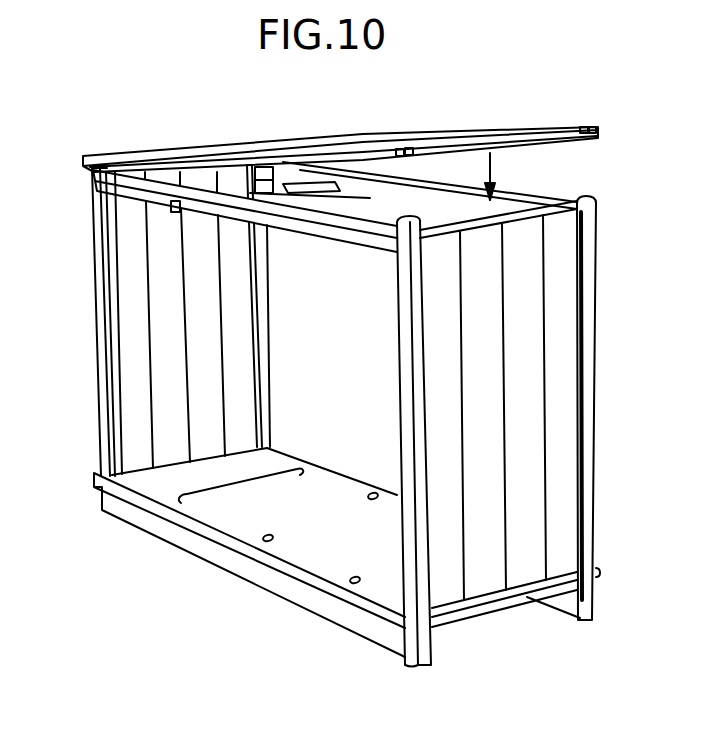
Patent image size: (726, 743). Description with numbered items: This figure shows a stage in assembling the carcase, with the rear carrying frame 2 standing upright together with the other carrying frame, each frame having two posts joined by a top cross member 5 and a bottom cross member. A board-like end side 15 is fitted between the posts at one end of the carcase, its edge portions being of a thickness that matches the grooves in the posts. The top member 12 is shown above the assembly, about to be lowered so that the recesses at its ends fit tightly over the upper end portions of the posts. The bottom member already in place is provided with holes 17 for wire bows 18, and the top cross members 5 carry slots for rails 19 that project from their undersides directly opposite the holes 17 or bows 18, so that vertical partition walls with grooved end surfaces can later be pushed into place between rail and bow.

The rear carrying frame 2 is at (600, 505).
The top cross member 5 is at (137, 188).
The top member 12 is at (376, 133).
The end side 15 is at (563, 411).
The hole 17 is at (187, 497).
The wire bow 18 is at (227, 483).
The rail 19 is at (278, 193).